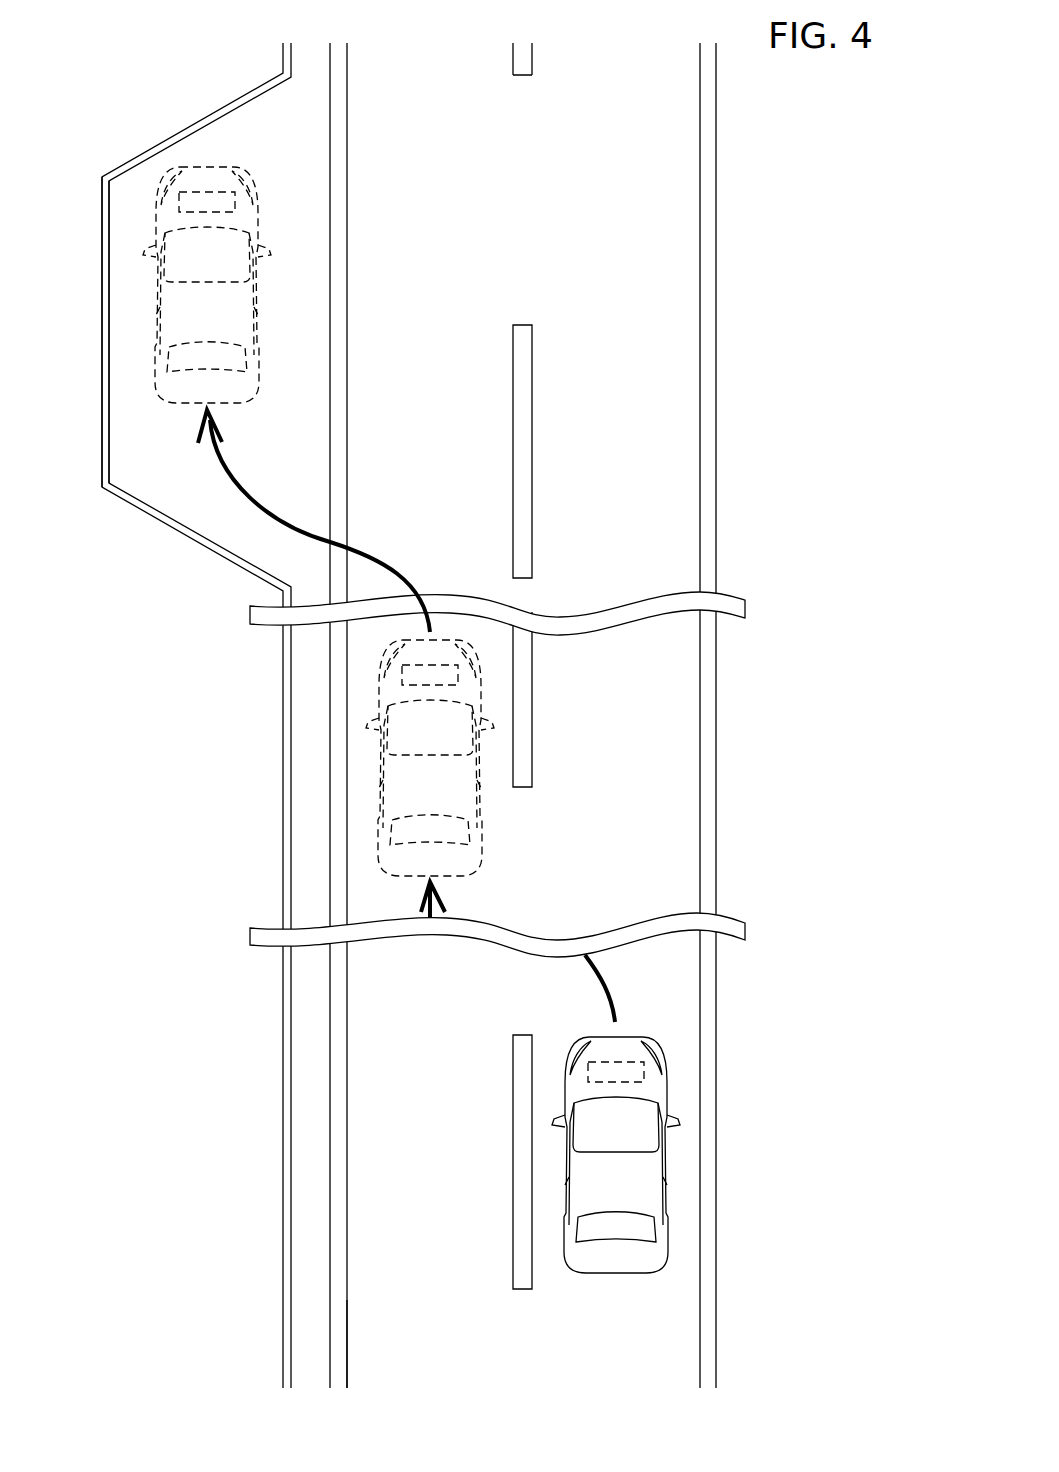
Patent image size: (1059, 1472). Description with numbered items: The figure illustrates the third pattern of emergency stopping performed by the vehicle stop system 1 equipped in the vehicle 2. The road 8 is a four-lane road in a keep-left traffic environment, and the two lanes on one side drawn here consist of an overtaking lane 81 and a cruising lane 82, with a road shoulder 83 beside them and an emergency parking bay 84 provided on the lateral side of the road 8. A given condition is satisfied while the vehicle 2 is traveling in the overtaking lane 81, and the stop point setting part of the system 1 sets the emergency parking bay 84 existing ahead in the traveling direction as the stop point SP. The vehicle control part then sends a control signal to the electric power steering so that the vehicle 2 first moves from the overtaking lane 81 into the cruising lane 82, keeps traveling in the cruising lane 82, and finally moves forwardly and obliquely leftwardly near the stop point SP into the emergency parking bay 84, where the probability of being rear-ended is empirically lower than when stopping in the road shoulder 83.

The vehicle stop system 1 is at (215, 197).
The vehicle 2 is at (250, 395).
The road 8 is at (725, 1353).
The overtaking lane 81 is at (620, 1313).
The cruising lane 82 is at (428, 1313).
The road shoulder 83 is at (308, 773).
The emergency parking bay 84 is at (130, 447).
The stop point SP is at (150, 285).